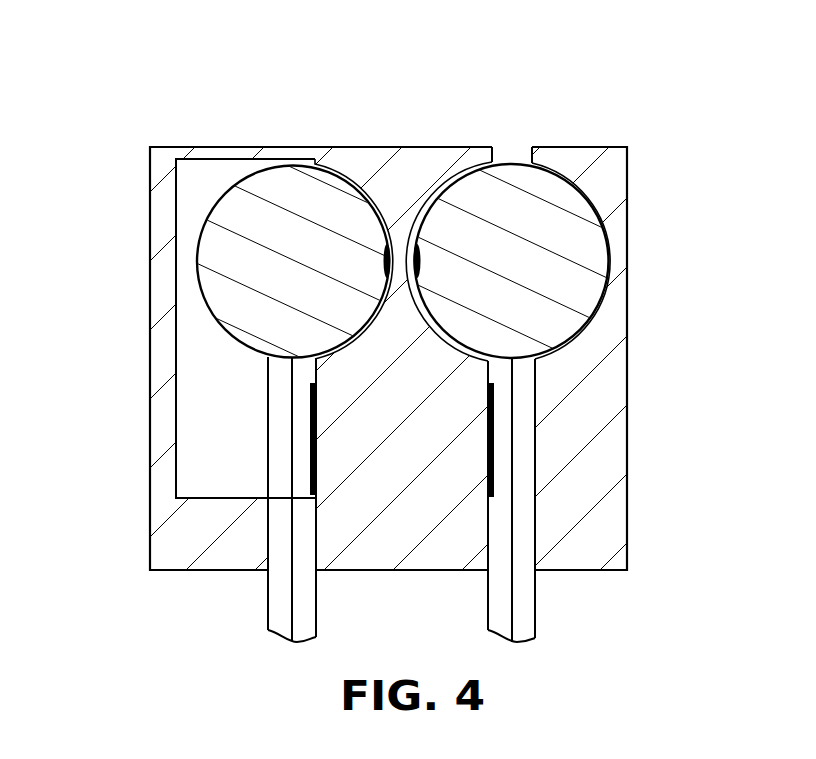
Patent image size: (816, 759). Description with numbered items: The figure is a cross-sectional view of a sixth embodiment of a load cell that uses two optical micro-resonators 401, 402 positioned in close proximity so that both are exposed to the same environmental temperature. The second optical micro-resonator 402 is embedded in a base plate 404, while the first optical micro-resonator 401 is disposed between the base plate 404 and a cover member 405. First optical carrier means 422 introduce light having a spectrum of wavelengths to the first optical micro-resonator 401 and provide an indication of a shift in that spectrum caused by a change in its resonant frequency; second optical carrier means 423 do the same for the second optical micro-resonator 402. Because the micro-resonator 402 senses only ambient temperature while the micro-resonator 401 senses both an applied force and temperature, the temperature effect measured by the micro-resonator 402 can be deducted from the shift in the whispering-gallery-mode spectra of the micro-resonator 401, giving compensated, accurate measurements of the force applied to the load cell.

The first optical micro-resonator 401 is at (593, 292).
The second optical micro-resonator 402 is at (252, 183).
The base plate 404 is at (148, 478).
The cover member 405 is at (628, 478).
The first optical carrier means 422 is at (538, 623).
The second optical carrier means 423 is at (268, 612).